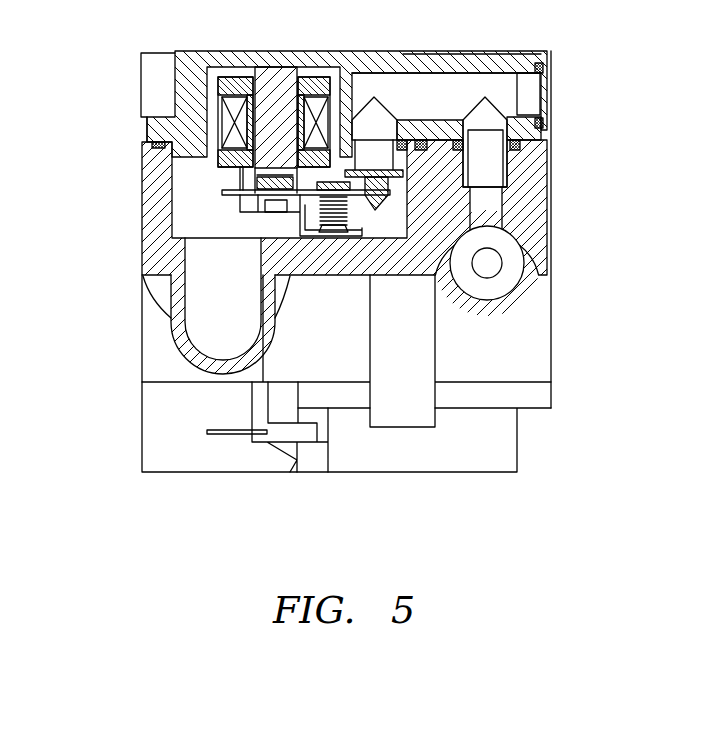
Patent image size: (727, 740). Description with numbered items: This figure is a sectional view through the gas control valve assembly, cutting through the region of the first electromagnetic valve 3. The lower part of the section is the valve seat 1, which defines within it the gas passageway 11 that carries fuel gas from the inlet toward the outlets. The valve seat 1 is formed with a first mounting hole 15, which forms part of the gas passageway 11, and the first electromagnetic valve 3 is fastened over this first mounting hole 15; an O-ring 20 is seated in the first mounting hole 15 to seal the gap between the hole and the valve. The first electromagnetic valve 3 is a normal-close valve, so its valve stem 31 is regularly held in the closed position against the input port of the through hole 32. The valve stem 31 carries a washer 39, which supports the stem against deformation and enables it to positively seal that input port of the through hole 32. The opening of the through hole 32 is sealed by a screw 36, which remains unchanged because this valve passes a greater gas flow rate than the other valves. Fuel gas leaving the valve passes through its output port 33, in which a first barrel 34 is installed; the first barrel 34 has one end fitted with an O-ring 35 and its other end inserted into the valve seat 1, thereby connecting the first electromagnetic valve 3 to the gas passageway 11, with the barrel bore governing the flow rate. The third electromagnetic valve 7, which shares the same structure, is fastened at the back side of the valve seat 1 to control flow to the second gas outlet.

The valve seat 1 is at (148, 253).
The first electromagnetic valve 3 is at (245, 57).
The third electromagnetic valve 7 is at (503, 437).
The gas passageway 11 is at (490, 263).
The first mounting hole 15 is at (180, 192).
The O-ring 20 is at (142, 148).
The valve stem 31 is at (375, 168).
The through hole 32 is at (443, 93).
The output port 33 is at (492, 115).
The first barrel 34 is at (507, 177).
The O-ring 35 is at (512, 147).
The screw 36 is at (538, 87).
The washer 39 is at (402, 175).